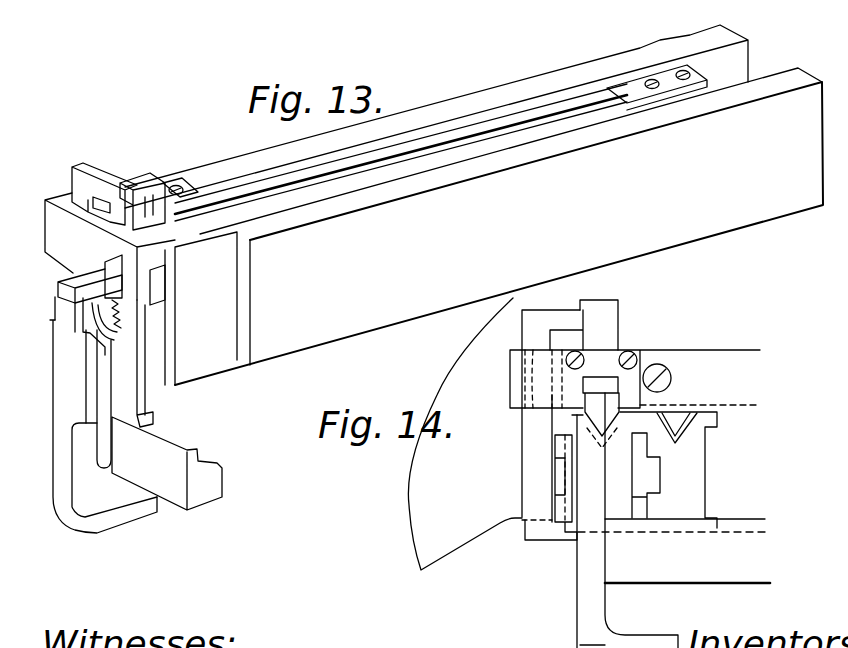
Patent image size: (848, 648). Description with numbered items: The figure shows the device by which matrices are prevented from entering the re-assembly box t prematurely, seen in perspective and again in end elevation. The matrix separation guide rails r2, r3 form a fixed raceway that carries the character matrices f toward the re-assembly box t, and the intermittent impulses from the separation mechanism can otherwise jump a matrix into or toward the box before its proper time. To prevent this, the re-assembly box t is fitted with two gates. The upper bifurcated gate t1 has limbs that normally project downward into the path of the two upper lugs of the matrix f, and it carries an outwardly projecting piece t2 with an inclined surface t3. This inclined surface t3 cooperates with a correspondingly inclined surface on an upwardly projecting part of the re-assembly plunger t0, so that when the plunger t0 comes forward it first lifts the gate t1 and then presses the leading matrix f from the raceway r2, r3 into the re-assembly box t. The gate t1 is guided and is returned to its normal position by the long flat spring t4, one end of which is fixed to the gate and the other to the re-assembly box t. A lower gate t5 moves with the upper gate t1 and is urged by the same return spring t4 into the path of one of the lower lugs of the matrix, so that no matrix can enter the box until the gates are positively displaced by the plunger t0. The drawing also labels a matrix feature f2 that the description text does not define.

In FIG. 13, the re-assembly box t is at (265, 335).
In FIG. 14, the re-assembly box t is at (528, 312).
In FIG. 13, the upper bifurcated gate t1 is at (145, 225).
In FIG. 14, the upper bifurcated gate t1 is at (593, 343).
In FIG. 13, the outwardly projecting piece t2 is at (78, 276).
In FIG. 14, the outwardly projecting piece t2 is at (607, 393).
In FIG. 13, the inclined surface t3 is at (112, 337).
In FIG. 13, the long flat spring t4 is at (327, 162).
In FIG. 14, the long flat spring t4 is at (607, 333).
In FIG. 14, the lower gate t5 is at (537, 527).
In FIG. 13, the re-assembly plunger t0 is at (73, 393).
In FIG. 14, the re-assembly plunger t0 is at (580, 568).
In FIG. 13, the matrix separation guide rail r2 is at (80, 232).
In FIG. 13, the matrix separation guide rail r3 is at (163, 472).
In FIG. 13, the character matrix f is at (88, 397).
In FIG. 14, the character matrix f is at (570, 420).
In FIG. 14, the frame clamp f2 is at (708, 438).